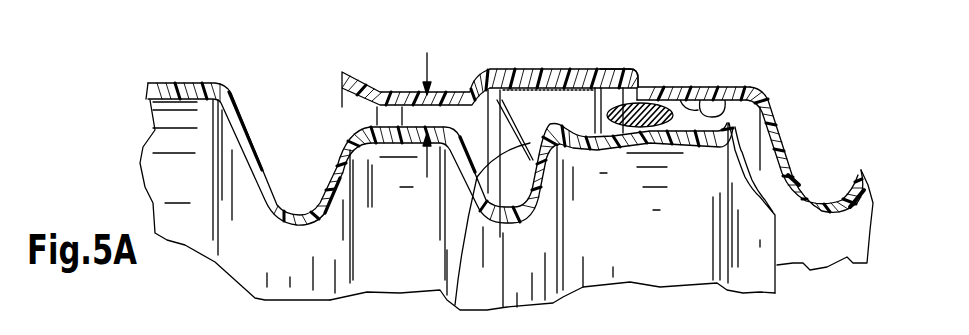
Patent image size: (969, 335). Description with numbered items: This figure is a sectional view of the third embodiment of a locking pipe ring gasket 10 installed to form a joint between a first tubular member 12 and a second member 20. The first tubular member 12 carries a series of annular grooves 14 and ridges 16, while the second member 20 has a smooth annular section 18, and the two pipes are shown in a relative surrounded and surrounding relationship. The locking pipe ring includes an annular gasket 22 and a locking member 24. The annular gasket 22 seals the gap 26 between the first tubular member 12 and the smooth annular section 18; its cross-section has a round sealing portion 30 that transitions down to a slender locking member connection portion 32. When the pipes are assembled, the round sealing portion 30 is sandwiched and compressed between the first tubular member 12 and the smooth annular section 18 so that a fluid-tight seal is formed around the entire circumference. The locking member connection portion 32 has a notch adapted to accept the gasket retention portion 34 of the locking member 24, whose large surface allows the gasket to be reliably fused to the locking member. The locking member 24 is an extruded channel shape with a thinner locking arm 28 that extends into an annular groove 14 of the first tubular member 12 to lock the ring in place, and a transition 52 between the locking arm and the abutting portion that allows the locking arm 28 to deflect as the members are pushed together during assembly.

The locking pipe ring gasket 10 is at (573, 100).
The first tubular member 12 is at (192, 97).
The annular groove 14 is at (293, 213).
The ridge 16 is at (400, 107).
The smooth annular section 18 is at (724, 110).
The second member 20 is at (786, 128).
The annular gasket 22 is at (662, 110).
The locking member 24 is at (568, 72).
The gap 26 is at (439, 51).
The locking arm 28 is at (456, 300).
The round sealing portion 30 is at (700, 97).
The locking member connection portion 32 is at (607, 87).
The gasket retention portion 34 is at (612, 72).
The transition 52 is at (517, 70).